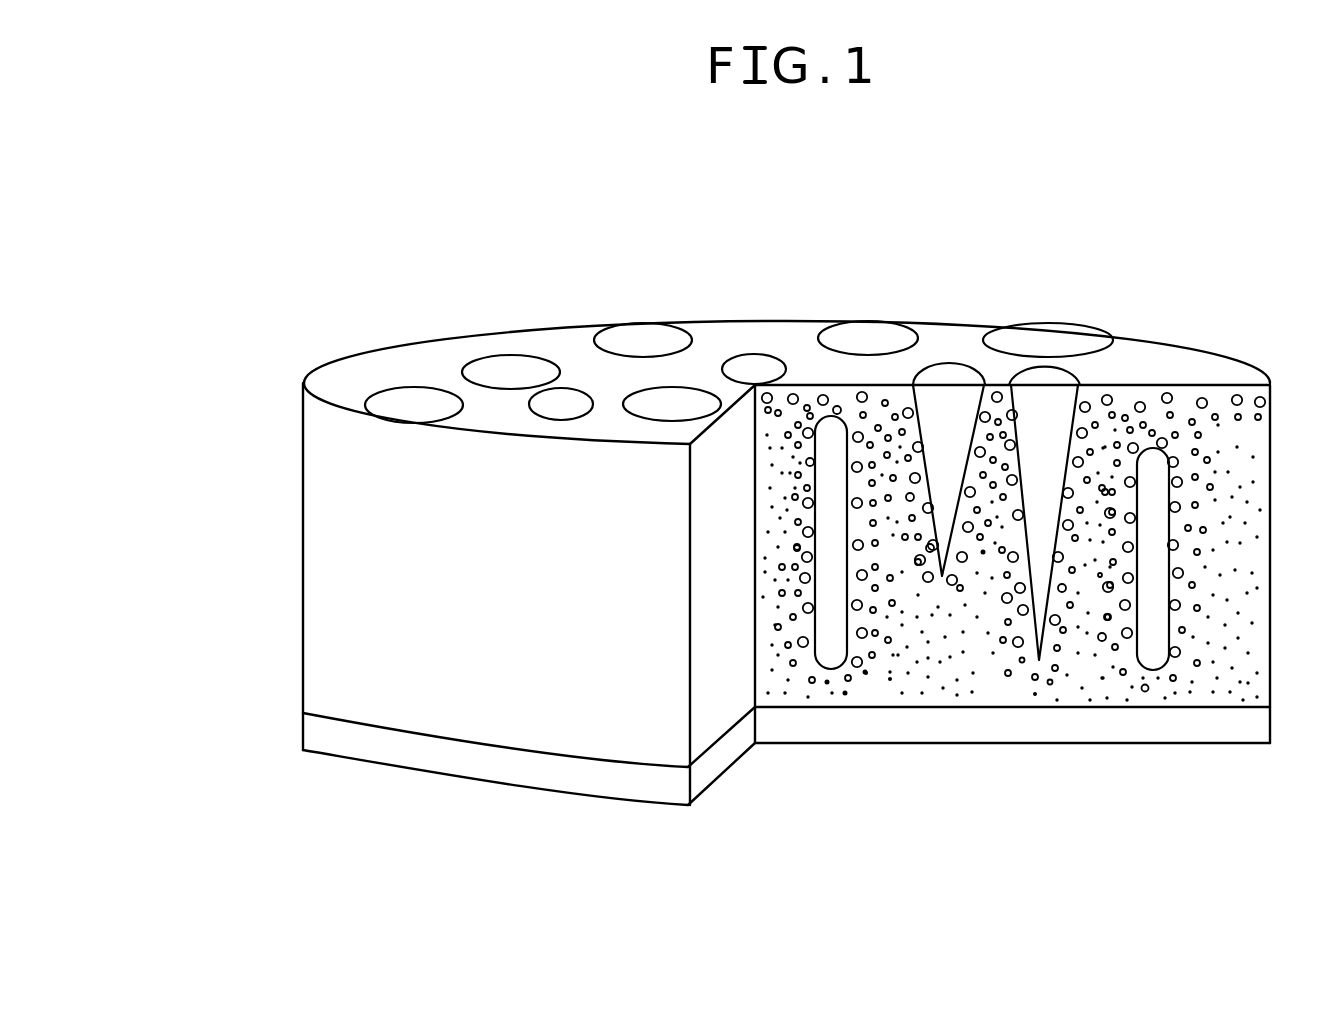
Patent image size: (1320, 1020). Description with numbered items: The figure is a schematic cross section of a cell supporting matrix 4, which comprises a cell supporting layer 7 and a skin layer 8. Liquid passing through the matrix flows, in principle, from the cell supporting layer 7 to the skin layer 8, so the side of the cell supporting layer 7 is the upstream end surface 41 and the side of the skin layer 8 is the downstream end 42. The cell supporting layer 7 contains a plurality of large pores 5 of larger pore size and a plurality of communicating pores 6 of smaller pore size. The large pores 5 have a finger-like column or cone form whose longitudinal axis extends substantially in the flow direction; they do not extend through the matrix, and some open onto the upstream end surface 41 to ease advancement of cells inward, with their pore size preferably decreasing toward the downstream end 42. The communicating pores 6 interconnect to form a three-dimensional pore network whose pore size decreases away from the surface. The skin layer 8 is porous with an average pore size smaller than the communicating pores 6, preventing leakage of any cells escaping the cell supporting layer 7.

The cell supporting matrix 4 is at (484, 250).
The upstream end surface 41 is at (617, 366).
The downstream end 42 is at (787, 758).
The large pores 5 is at (828, 452).
The communicating pores 6 is at (1224, 432).
The cell supporting layer 7 is at (238, 376).
The skin layer 8 is at (327, 742).